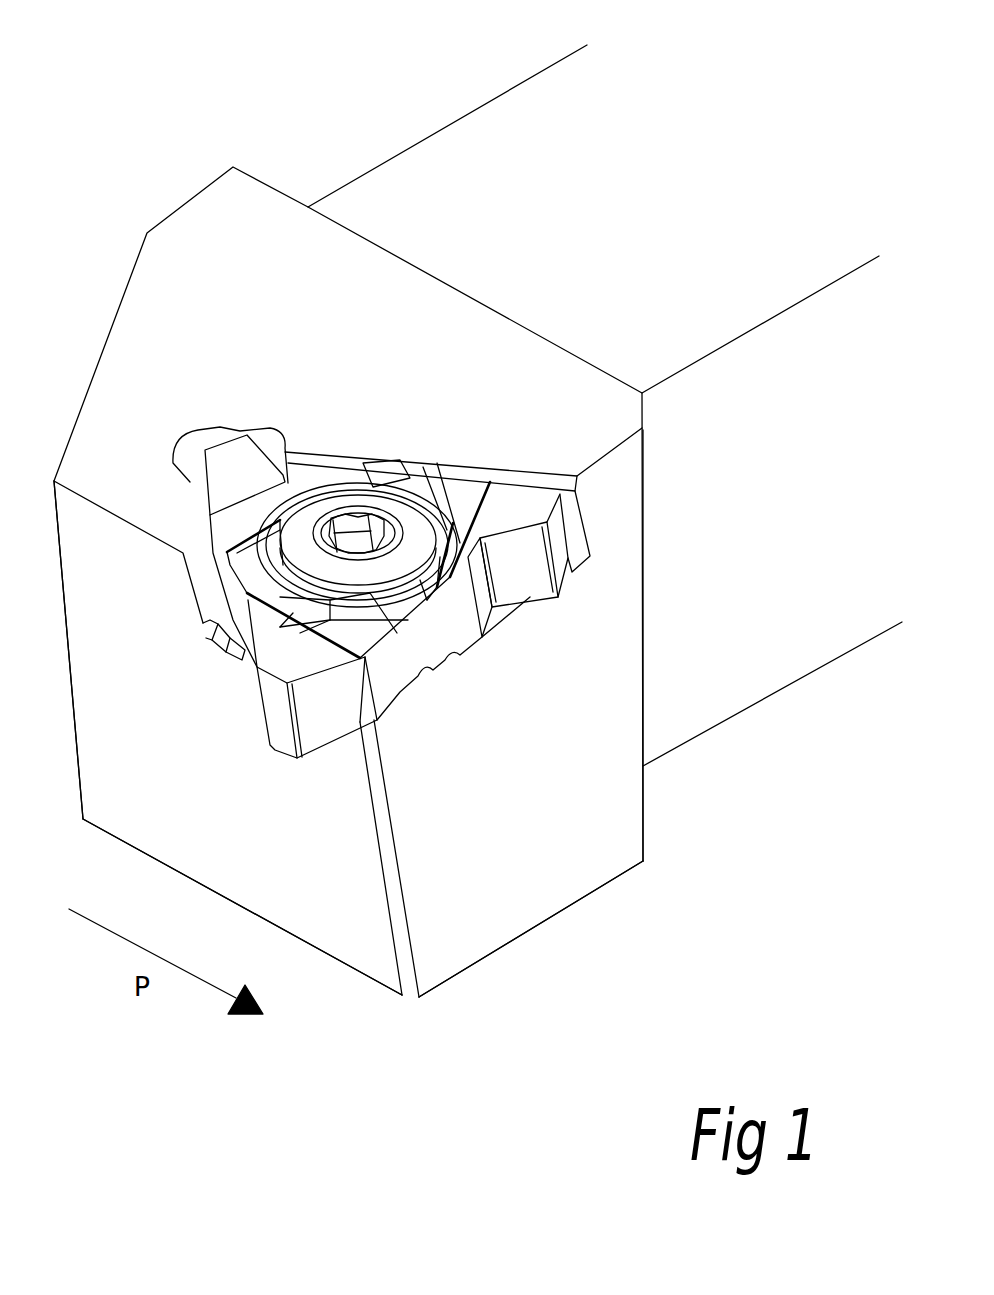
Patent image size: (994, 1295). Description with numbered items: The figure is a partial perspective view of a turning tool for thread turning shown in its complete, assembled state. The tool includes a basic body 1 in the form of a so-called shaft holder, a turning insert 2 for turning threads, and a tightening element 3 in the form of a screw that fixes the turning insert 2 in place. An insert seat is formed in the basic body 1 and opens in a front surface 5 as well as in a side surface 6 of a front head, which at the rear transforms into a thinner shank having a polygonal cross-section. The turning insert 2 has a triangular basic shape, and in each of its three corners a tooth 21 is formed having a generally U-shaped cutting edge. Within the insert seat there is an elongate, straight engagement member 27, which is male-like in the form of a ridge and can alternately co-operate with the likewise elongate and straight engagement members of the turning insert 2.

The basic body 1 is at (359, 122).
The turning insert 2 is at (447, 453).
The tightening element 3 is at (340, 500).
The front surface 5 is at (205, 806).
The side surface 6 is at (524, 805).
The tooth 21 is at (538, 603).
The engagement member 27 is at (210, 633).